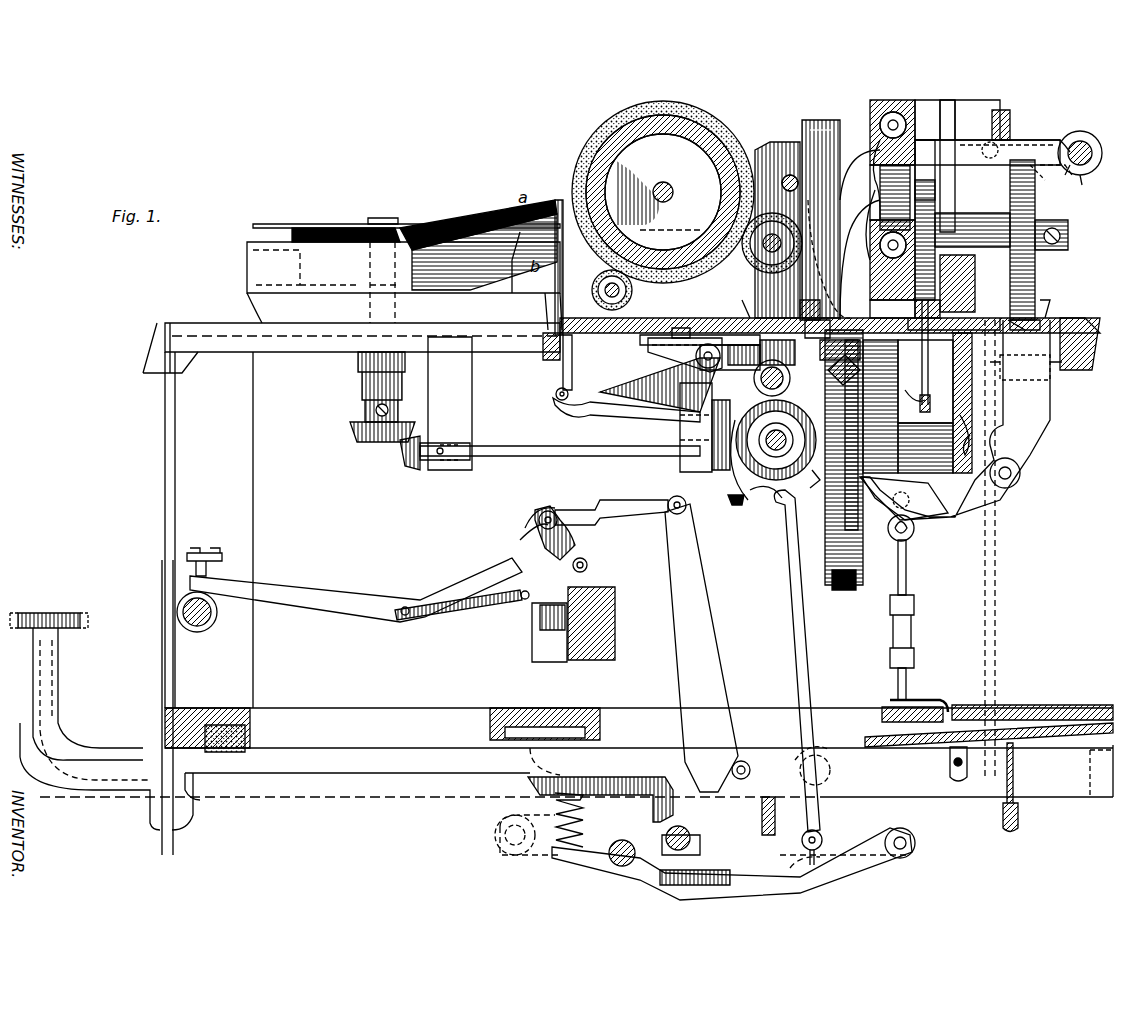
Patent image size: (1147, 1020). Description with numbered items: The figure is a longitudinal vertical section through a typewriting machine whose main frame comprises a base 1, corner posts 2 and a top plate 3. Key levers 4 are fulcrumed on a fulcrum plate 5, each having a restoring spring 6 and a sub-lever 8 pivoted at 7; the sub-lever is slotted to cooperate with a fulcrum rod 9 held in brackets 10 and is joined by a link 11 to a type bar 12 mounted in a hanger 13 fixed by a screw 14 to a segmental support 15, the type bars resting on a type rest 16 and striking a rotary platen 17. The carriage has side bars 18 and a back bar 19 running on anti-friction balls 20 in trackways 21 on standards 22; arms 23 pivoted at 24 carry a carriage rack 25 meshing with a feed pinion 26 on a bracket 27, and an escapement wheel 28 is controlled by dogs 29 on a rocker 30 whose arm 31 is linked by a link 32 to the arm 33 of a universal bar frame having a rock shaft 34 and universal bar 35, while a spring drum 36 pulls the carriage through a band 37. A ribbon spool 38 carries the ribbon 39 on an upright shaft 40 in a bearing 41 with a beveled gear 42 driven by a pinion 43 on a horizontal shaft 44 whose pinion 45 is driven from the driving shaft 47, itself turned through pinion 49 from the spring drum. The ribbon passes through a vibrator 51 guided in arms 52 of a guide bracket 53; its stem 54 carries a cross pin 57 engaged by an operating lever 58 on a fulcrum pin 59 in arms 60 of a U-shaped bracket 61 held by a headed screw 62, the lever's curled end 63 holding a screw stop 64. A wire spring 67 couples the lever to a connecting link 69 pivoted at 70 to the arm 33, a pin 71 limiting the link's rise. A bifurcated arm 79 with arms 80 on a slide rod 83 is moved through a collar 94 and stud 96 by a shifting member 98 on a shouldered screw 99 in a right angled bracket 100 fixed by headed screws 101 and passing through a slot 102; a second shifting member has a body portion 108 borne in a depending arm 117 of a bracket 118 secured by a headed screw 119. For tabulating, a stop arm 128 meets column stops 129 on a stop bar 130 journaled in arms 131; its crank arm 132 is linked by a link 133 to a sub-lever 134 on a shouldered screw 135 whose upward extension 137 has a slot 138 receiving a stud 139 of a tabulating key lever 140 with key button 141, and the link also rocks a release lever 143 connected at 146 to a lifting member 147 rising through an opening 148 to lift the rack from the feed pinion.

The base 1 is at (312, 720).
The corner post 2 is at (253, 500).
The top plate 3 is at (290, 348).
The key lever 4 is at (340, 752).
The fulcrum plate 5 is at (1020, 720).
The restoring spring 6 is at (802, 712).
The pivot 7 is at (742, 760).
The sub-lever 8 is at (708, 636).
The fulcrum rod 9 is at (666, 838).
The bracket 10 is at (622, 790).
The link 11 is at (626, 506).
The type bar 12 is at (375, 572).
The hanger 13 is at (575, 585).
The screw 14 is at (540, 636).
The segmental support 15 is at (616, 642).
The type rest 16 is at (210, 615).
The rotary platen 17 is at (590, 150).
The side bar 18 is at (762, 150).
The back bar 19 is at (890, 190).
The anti-friction ball 20 is at (875, 122).
The trackway 21 is at (925, 130).
The standard 22 is at (1005, 125).
The arm 23 is at (922, 175).
The pivot 24 is at (810, 150).
The carriage rack 25 is at (956, 185).
The feed pinion 26 is at (948, 215).
The bracket 27 is at (960, 248).
The escapement wheel 28 is at (1036, 268).
The escapement dog 29 is at (1058, 295).
The dog rocker 30 is at (1036, 437).
The arm 31 is at (932, 512).
The link 32 is at (918, 580).
The arm 33 is at (785, 870).
The rock shaft 34 is at (618, 866).
The universal bar 35 is at (762, 815).
The spring drum 36 is at (826, 578).
The band 37 is at (845, 592).
The ribbon spool 38 is at (278, 224).
The ribbon 39 is at (490, 230).
The upright shaft 40 is at (383, 218).
The bearing 41 is at (358, 362).
The beveled gear 42 is at (365, 438).
The beveled pinion 43 is at (410, 468).
The horizontal shaft 44 is at (530, 456).
The beveled pinion 45 is at (745, 506).
The driving shaft 47 is at (770, 460).
The beveled pinion 49 is at (818, 480).
The vibratory ribbon carrier 51 is at (557, 198).
The upright arm 52 is at (535, 296).
The guide bracket 53 is at (545, 350).
The stem 54 is at (563, 368).
The cross pin 57 is at (556, 392).
The operating lever 58 is at (625, 398).
The fulcrum pin 59 is at (700, 375).
The arm 60 is at (660, 350).
The U-shaped bracket 61 is at (655, 335).
The headed screw 62 is at (684, 326).
The curled end 63 is at (860, 375).
The screw stop 64 is at (845, 405).
The wire spring 67 is at (670, 390).
The connecting link 69 is at (790, 620).
The pivot 70 is at (815, 866).
The pin 71 is at (720, 340).
The bifurcated arm 79 is at (730, 410).
The arm 80 is at (745, 470).
The slide rod 83 is at (748, 300).
The collar 94 is at (754, 378).
The stud 96 is at (880, 400).
The shifting member 98 is at (808, 318).
The shouldered screw 99 is at (855, 350).
The right angled bracket 100 is at (775, 340).
The headed screw 101 is at (740, 345).
The slot 102 is at (790, 305).
The body portion 108 is at (868, 308).
The depending arm 117 is at (870, 258).
The bracket 118 is at (870, 150).
The headed screw 119 is at (845, 190).
The stop arm 128 is at (968, 140).
The column stop 129 is at (1075, 130).
The stop bar 130 is at (1084, 180).
The arm 131 is at (1072, 192).
The crank arm 132 is at (1047, 180).
The link 133 is at (996, 600).
The sub-lever 134 is at (568, 868).
The shouldered screw 135 is at (512, 858).
The upward extension 137 is at (830, 772).
The slot 138 is at (870, 748).
The stud 139 is at (818, 742).
The tabulating key lever 140 is at (285, 795).
The key button 141 is at (84, 620).
The release lever 143 is at (930, 395).
The connection 146 is at (912, 385).
The lifting member 147 is at (950, 355).
The opening 148 is at (912, 312).